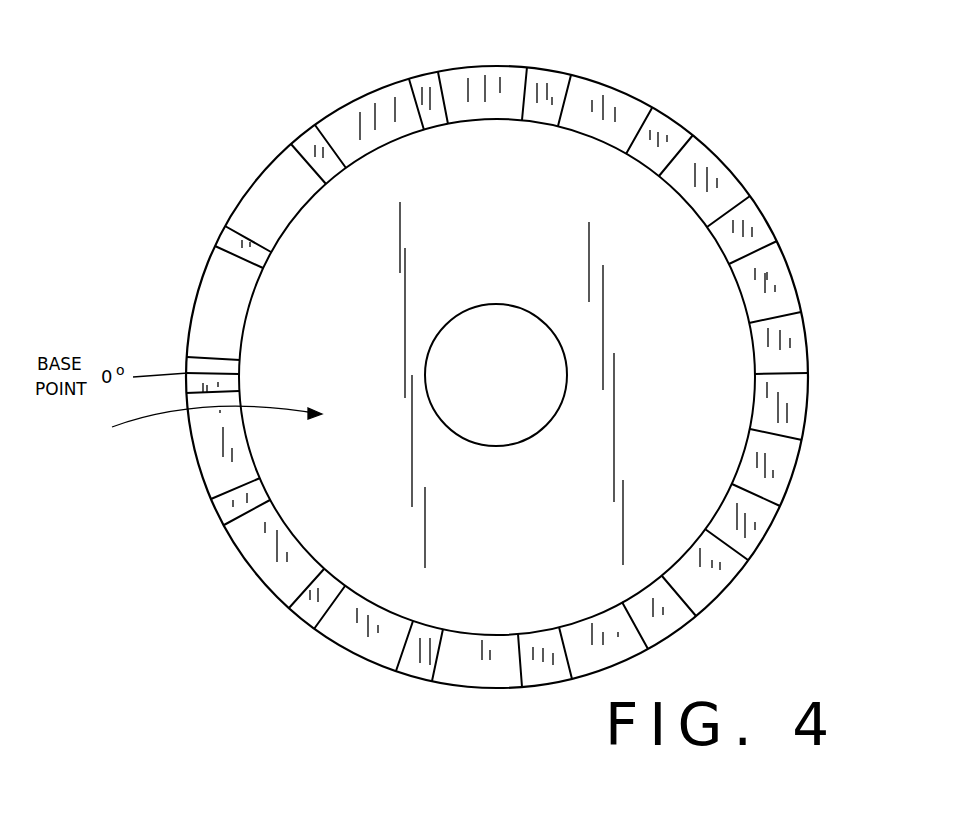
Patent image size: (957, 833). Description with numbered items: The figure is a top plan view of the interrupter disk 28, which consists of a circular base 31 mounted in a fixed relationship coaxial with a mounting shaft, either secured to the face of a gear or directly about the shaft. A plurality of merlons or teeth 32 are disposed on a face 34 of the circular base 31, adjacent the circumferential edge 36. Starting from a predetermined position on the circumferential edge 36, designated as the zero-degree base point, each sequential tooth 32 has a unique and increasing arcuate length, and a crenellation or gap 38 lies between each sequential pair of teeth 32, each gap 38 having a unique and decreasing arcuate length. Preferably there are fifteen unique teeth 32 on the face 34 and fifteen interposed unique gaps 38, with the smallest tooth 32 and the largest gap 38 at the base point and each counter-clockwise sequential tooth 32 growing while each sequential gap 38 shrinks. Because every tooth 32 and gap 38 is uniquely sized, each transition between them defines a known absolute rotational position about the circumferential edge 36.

The interrupter disk 28 is at (272, 122).
The circular base 31 is at (112, 427).
The teeth 32 is at (272, 202).
The face 34 is at (468, 258).
The circumferential edge 36 is at (367, 90).
The gap 38 is at (197, 367).